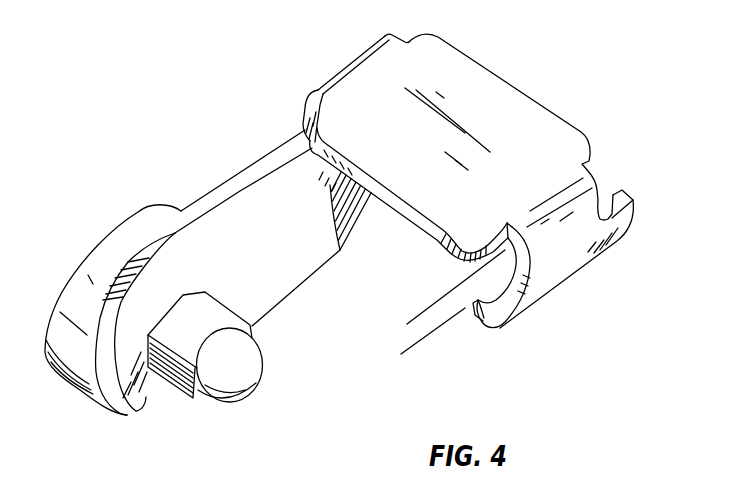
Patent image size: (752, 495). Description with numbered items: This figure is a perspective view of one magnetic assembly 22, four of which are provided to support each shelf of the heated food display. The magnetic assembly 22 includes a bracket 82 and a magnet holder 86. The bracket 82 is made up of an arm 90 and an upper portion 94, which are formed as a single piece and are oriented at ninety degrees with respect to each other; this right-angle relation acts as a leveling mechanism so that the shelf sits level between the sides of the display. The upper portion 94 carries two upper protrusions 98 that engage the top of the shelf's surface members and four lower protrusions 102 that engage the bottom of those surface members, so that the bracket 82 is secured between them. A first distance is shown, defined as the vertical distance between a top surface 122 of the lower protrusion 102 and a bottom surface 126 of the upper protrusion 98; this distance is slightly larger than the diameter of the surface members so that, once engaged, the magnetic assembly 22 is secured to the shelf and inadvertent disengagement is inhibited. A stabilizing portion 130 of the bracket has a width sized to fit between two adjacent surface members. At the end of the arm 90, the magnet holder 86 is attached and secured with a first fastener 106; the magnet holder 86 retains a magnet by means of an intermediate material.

The magnetic assembly 22 is at (562, 38).
The bracket 82 is at (618, 120).
The magnet holder 86 is at (112, 240).
The arm 90 is at (125, 384).
The upper portion 94 is at (466, 112).
The upper protrusion 98 is at (512, 118).
The lower protrusion 102 is at (240, 168).
The first fastener 106 is at (250, 378).
The top surface 122 is at (283, 145).
The bottom surface 126 is at (403, 226).
The stabilizing portion 130 is at (346, 68).